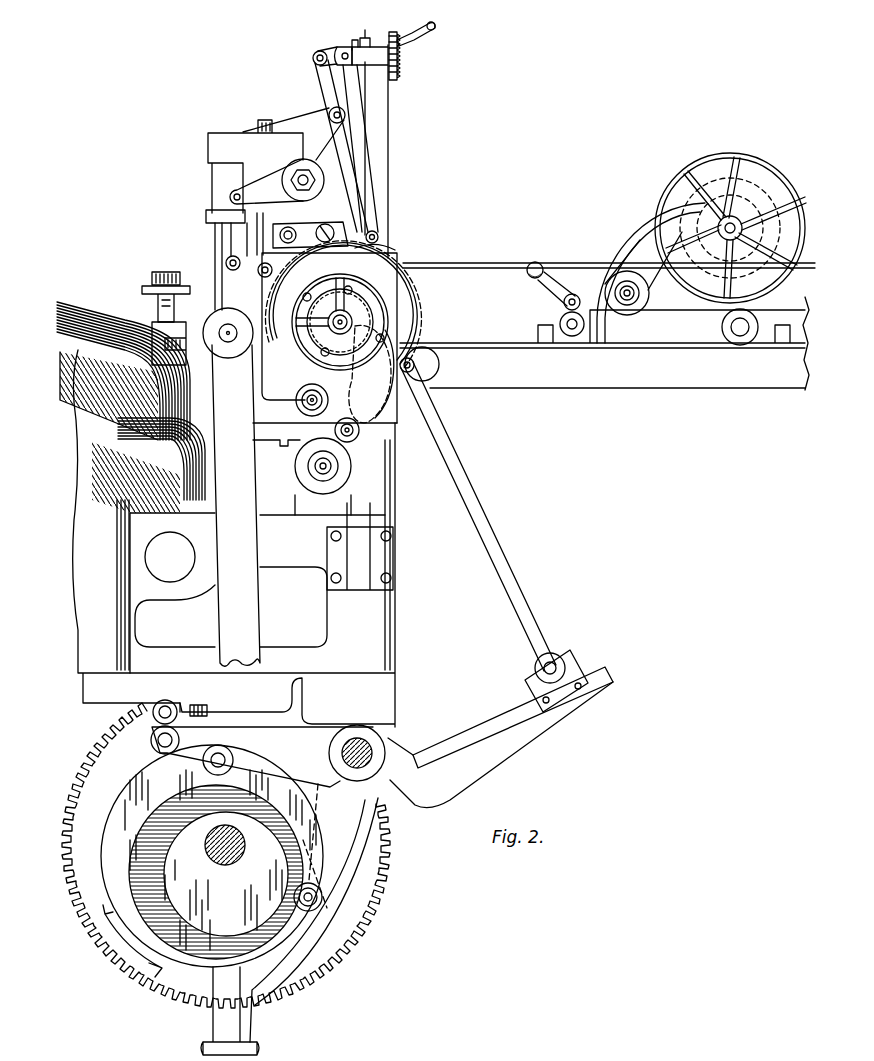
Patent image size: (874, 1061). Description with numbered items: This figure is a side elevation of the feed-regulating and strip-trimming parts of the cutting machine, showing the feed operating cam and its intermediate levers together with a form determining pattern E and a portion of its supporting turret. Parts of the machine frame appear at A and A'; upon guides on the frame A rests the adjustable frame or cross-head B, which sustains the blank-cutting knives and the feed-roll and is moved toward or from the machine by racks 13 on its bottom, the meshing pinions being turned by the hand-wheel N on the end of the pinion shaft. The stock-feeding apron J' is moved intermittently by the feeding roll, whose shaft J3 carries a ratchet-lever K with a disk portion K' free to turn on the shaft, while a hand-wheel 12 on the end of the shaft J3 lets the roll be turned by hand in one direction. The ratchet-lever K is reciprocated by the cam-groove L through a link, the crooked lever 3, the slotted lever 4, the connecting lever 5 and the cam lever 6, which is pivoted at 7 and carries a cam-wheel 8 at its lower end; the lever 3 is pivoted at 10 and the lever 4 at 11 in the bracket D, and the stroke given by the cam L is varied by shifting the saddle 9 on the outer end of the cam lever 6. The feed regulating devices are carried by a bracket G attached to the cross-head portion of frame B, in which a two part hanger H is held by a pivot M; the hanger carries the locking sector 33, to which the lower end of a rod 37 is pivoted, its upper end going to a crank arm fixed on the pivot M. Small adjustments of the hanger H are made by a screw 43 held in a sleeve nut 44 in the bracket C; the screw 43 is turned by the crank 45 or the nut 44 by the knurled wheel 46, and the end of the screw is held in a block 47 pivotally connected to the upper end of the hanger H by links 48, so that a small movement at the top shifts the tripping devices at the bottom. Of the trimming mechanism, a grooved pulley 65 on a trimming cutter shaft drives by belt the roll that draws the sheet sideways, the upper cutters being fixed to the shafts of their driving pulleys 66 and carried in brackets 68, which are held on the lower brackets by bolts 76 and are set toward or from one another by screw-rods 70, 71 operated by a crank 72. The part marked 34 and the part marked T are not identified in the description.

The crooked lever 3 is at (368, 232).
The slotted lever 4 is at (371, 373).
The connecting lever 5 is at (473, 483).
The cam lever 6 is at (444, 798).
The pivot 7 is at (372, 744).
The cam-wheel 8 is at (323, 893).
The saddle 9 is at (565, 660).
The pivot 10 is at (312, 400).
The pivot 11 is at (372, 440).
The hand-wheel 12 is at (404, 264).
The racks 13 is at (282, 450).
The sector 33 is at (380, 235).
The arc segment 34 is at (388, 248).
The rod 37 is at (350, 196).
The screw 43 is at (353, 42).
The sleeve nut 44 is at (365, 30).
The crank 45 is at (414, 33).
The knurled wheel 46 is at (394, 30).
The block 47 is at (345, 50).
The links 48 is at (314, 55).
The grooved pulley 65 is at (695, 226).
The pulley 66 is at (672, 168).
The bracket 68 is at (651, 273).
The screw-rod 70 is at (565, 306).
The screw-rod 71 is at (571, 334).
The crank 72 is at (548, 288).
The bolts 76 is at (625, 305).
The frame A is at (248, 538).
The frame A' is at (233, 593).
The adjustable frame or cross-head B is at (208, 168).
The bracket C is at (380, 112).
The bracket D is at (330, 556).
The pattern E is at (152, 272).
The bracket G is at (295, 118).
The two part hanger H is at (322, 78).
The stock-feeding apron J' is at (604, 330).
The shaft J3 is at (352, 323).
The ratchet-lever K is at (220, 439).
The disk portion K' is at (261, 260).
The cam-groove L is at (300, 930).
The pivot M is at (339, 106).
The hand-wheel N is at (300, 482).
The leaf stack T is at (85, 298).